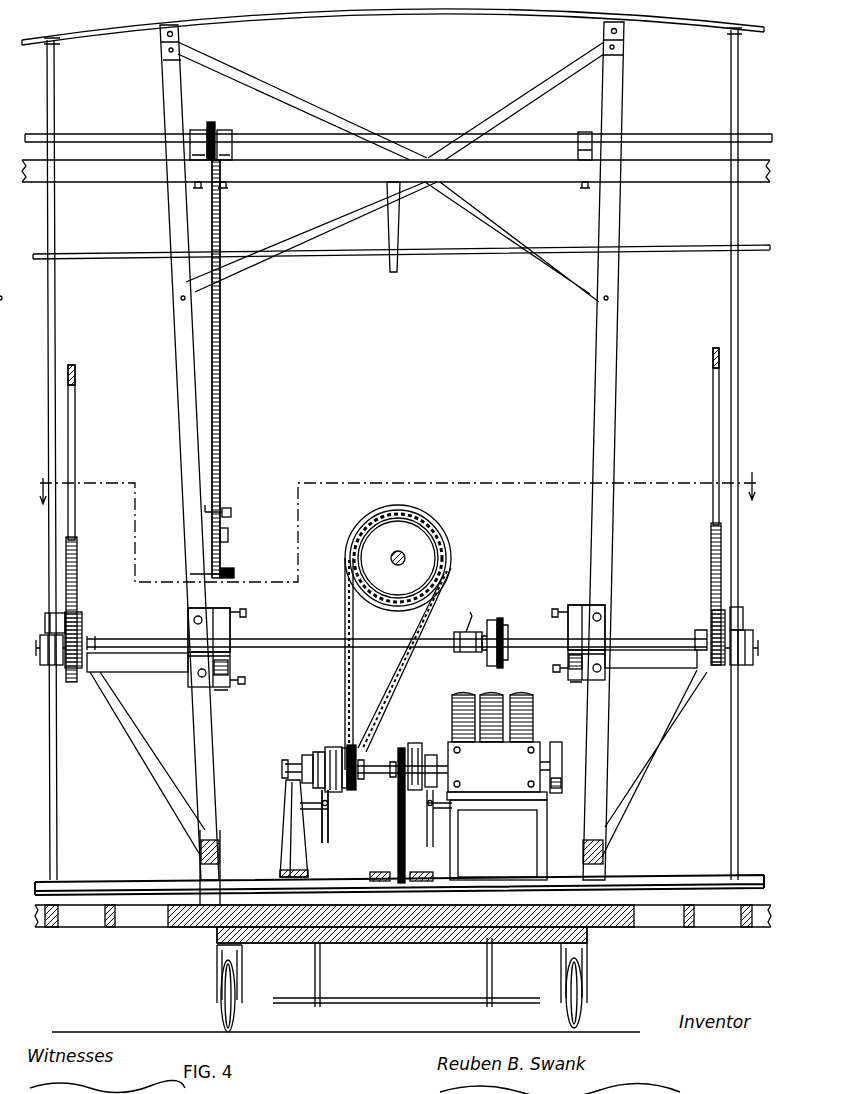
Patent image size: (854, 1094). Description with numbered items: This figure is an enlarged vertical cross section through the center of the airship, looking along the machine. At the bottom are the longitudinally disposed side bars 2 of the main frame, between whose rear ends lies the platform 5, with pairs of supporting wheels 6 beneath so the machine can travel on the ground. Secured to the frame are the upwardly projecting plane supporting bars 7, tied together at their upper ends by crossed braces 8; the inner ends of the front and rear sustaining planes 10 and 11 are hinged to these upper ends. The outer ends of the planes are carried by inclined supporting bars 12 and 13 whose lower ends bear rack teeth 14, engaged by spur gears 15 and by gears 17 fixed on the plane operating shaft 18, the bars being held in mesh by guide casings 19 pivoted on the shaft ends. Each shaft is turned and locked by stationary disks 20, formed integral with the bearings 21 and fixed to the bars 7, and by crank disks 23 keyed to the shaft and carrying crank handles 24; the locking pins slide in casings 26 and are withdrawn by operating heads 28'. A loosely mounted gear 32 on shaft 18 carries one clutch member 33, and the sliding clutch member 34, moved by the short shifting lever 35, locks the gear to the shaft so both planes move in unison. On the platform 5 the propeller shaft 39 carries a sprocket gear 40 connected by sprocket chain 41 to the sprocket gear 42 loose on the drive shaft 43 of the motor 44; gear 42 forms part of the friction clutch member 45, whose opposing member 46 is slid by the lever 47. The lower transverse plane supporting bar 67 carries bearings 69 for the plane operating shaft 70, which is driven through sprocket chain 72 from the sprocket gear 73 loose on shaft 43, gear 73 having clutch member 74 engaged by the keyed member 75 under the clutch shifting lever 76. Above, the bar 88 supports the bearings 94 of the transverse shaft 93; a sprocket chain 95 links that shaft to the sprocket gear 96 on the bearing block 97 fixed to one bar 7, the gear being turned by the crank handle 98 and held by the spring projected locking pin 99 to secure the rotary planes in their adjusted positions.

The side bars 2 is at (214, 935).
The platform 5 is at (765, 485).
The supporting wheels 6 is at (222, 1016).
The plane supporting bars 7 is at (178, 376).
The crossed braces 8 is at (300, 107).
The front sustaining plane 10 is at (428, 18).
The rear sustaining plane 11 is at (386, 944).
The inclined supporting bars 12 is at (56, 330).
The inclined supporting bars 13 is at (74, 422).
The rack teeth 14 is at (78, 578).
The spur gears 15 is at (50, 666).
The gears 17 is at (73, 672).
The plane operating shaft 18 is at (118, 645).
The guide casings 19 is at (52, 616).
The stationary disks 20 is at (192, 684).
The bearings 21 is at (192, 656).
The crank disks 23 is at (232, 646).
The crank handles 24 is at (244, 616).
The casings 26 is at (220, 692).
The operating heads 28' is at (399, 673).
The loosely mounted gear 32 is at (502, 618).
The clutch member 33 is at (492, 662).
The clutch member 34 is at (470, 654).
The shifting lever 35 is at (470, 614).
The propeller shaft 39 is at (410, 550).
The sprocket gear 40 is at (400, 520).
The sprocket chain 41 is at (352, 680).
The sprocket gear 42 is at (346, 792).
The drive shaft 43 is at (378, 760).
The motor 44 is at (504, 787).
The friction clutch member 45 is at (338, 746).
The clutch member 46 is at (318, 756).
The lever 47 is at (288, 834).
The plane supporting bar 67 is at (110, 928).
The bearings 69 is at (378, 872).
The plane operating shaft 70 is at (100, 882).
The sprocket chain 72 is at (326, 836).
The sprocket gear 73 is at (406, 748).
The clutch member 74 is at (415, 748).
The clutch member 75 is at (398, 806).
The clutch shifting lever 76 is at (436, 828).
The bar 88 is at (273, 172).
The shaft 93 is at (88, 136).
The bearings 94 is at (215, 124).
The sprocket chain 95 is at (222, 392).
The sprocket gear 96 is at (229, 530).
The bearing block 97 is at (226, 488).
The crank handle 98 is at (235, 574).
The locking pin 99 is at (232, 512).